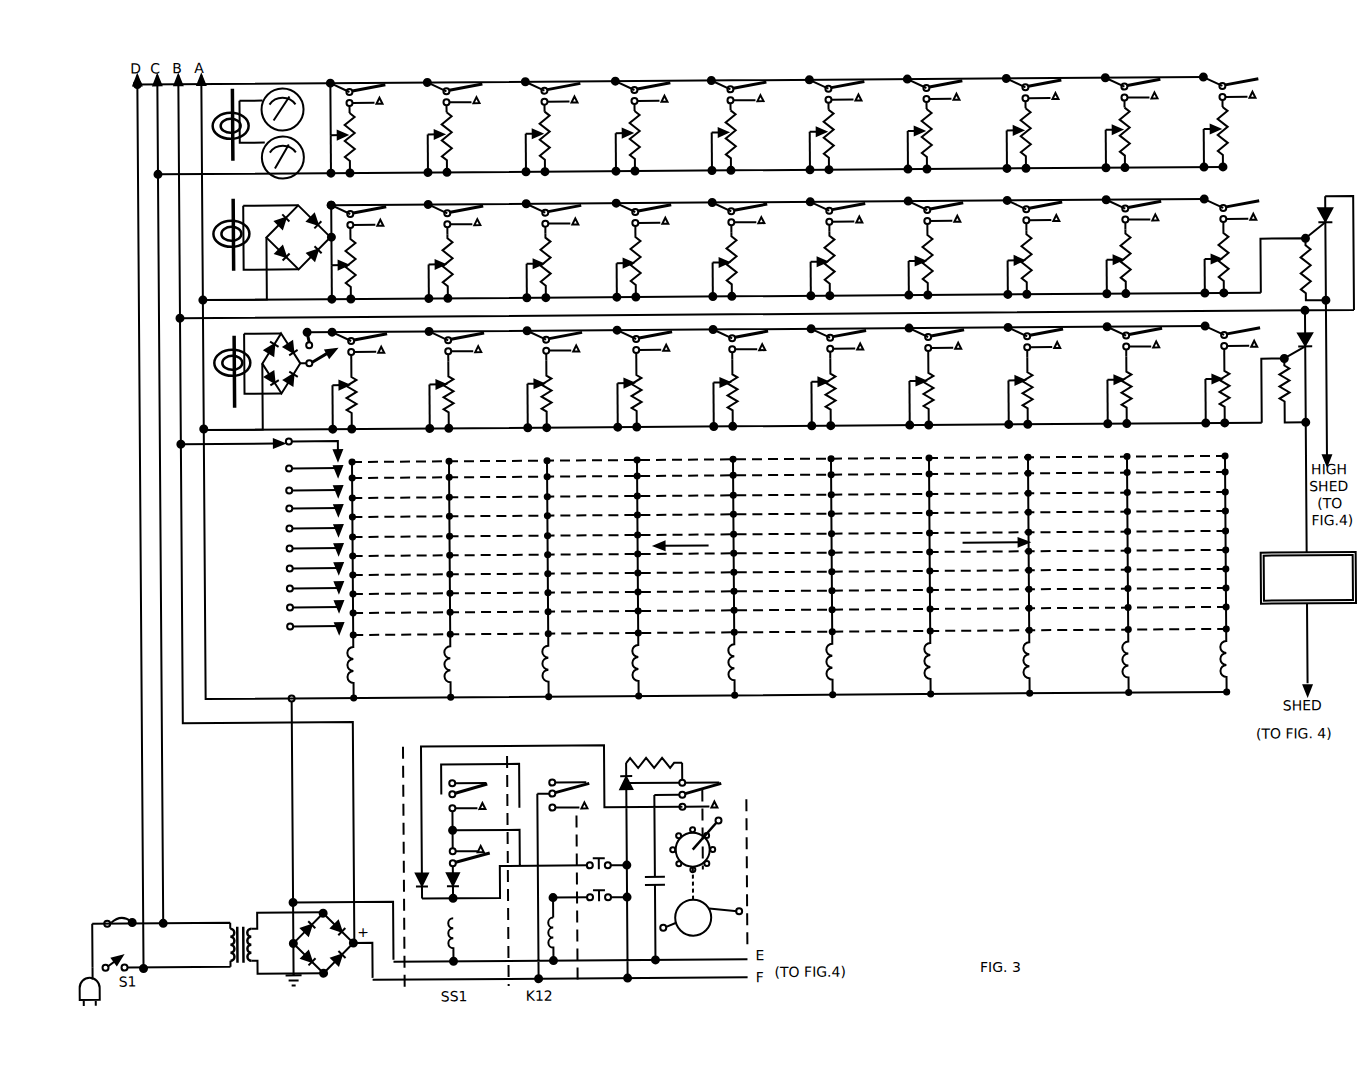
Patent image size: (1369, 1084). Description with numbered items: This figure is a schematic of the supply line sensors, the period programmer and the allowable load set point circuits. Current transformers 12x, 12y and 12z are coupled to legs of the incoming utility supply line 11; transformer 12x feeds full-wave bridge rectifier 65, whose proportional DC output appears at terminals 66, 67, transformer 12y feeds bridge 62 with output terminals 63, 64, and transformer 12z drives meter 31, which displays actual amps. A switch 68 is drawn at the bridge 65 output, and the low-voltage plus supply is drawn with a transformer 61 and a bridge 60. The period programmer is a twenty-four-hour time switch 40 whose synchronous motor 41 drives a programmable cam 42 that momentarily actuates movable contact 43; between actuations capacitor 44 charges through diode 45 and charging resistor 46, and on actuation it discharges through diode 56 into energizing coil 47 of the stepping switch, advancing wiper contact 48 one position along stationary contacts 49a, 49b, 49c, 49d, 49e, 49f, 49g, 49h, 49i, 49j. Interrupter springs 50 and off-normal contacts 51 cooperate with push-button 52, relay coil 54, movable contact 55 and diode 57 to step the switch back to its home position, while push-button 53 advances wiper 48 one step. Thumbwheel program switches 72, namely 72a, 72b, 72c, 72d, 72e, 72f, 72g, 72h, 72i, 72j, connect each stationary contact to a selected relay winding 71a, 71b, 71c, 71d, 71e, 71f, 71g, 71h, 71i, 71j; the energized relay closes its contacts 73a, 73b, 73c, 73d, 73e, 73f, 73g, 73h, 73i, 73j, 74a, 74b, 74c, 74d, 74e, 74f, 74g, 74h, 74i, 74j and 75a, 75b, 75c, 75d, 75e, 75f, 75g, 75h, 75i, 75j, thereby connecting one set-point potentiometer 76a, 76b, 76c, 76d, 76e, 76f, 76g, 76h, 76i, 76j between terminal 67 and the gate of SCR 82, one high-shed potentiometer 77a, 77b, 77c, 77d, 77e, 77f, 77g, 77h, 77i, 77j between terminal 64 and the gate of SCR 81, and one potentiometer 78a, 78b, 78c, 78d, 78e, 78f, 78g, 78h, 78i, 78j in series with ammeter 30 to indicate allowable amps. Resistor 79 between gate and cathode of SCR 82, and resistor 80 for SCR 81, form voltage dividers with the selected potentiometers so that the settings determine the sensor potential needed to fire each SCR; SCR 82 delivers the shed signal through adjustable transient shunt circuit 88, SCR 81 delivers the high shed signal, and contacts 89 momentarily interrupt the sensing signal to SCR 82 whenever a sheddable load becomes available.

The incoming utility supply line 11 is at (233, 388).
The current transformer 12x is at (228, 356).
The current transformer 12y is at (228, 220).
The current transformer 12z is at (226, 116).
The AC ammeter 30 is at (306, 150).
The meter 31 is at (305, 103).
The time switch 40 is at (730, 876).
The synchronous motor 41 is at (705, 930).
The programmable cam 42 is at (712, 848).
The movable timer contact 43 is at (722, 785).
The capacitor 44 is at (640, 872).
The diode 45 is at (633, 783).
The charging resistor 46 is at (645, 762).
The energizing coil 47 is at (460, 940).
The wiper contact 48 is at (272, 452).
The stationary contact 49a is at (289, 438).
The stationary contact 49b is at (286, 469).
The stationary contact 49c is at (286, 491).
The stationary contact 49d is at (286, 509).
The stationary contact 49e is at (286, 529).
The stationary contact 49f is at (286, 549).
The stationary contact 49g is at (286, 569).
The stationary contact 49h is at (286, 589).
The stationary contact 49i is at (286, 608).
The stationary contact 49j is at (286, 627).
The interrupter springs 50 is at (496, 836).
The off-normal contacts 51 is at (480, 790).
The push-button switch 52 is at (600, 906).
The push-button switch 53 is at (608, 853).
The energizing coil 54 is at (560, 940).
The movable contact 55 is at (594, 788).
The diode 56 is at (426, 876).
The diode 57 is at (462, 882).
The rectifier bridge 60 is at (330, 951).
The power transformer 61 is at (235, 922).
The full-wave bridge rectifier 62 is at (309, 245).
The output terminal 63 is at (281, 220).
The output terminal 64 is at (327, 250).
The full-wave bridge rectifier 65 is at (292, 372).
The output terminal 66 is at (262, 400).
The plus output terminal 67 is at (306, 378).
The switch 68 is at (326, 364).
The relay winding 71a is at (356, 683).
The relay winding 71b is at (453, 683).
The relay winding 71c is at (551, 683).
The relay winding 71d is at (641, 683).
The relay winding 71e is at (737, 683).
The relay winding 71f is at (835, 683).
The relay winding 71g is at (933, 683).
The relay winding 71h is at (1032, 683).
The relay winding 71i is at (1131, 683).
The relay winding 71j is at (1229, 683).
The thumbwheel program switches 72 is at (1030, 447).
The thumbwheel program switch 72a is at (1229, 462).
The thumbwheel program switch 72b is at (1229, 478).
The thumbwheel program switch 72c is at (1229, 498).
The thumbwheel program switch 72d is at (1229, 517).
The thumbwheel program switch 72e is at (1229, 537).
The thumbwheel program switch 72f is at (1229, 556).
The thumbwheel program switch 72g is at (1229, 575).
The thumbwheel program switch 72h is at (1229, 594).
The thumbwheel program switch 72i is at (1229, 613).
The thumbwheel program switch 72j is at (1229, 635).
The relay contact 73a is at (388, 349).
The relay contact 73b is at (485, 349).
The relay contact 73c is at (583, 349).
The relay contact 73d is at (673, 349).
The relay contact 73e is at (769, 349).
The relay contact 73f is at (867, 349).
The relay contact 73g is at (965, 349).
The relay contact 73h is at (1064, 349).
The relay contact 73i is at (1163, 349).
The relay contact 73j is at (1261, 349).
The relay contact 74a is at (388, 222).
The relay contact 74b is at (485, 222).
The relay contact 74c is at (583, 222).
The relay contact 74d is at (673, 222).
The relay contact 74e is at (769, 222).
The relay contact 74f is at (867, 222).
The relay contact 74g is at (965, 222).
The relay contact 74h is at (1064, 222).
The relay contact 74i is at (1163, 222).
The relay contact 74j is at (1261, 222).
The relay contact 75a is at (388, 100).
The relay contact 75b is at (485, 100).
The relay contact 75c is at (583, 100).
The relay contact 75d is at (673, 100).
The relay contact 75e is at (769, 100).
The relay contact 75f is at (867, 100).
The relay contact 75g is at (965, 100).
The relay contact 75h is at (1064, 100).
The relay contact 75i is at (1163, 100).
The relay contact 75j is at (1261, 100).
The set point potentiometer 76a is at (357, 392).
The set point potentiometer 76b is at (454, 392).
The set point potentiometer 76c is at (552, 392).
The set point potentiometer 76d is at (642, 392).
The set point potentiometer 76e is at (738, 392).
The set point potentiometer 76f is at (836, 392).
The set point potentiometer 76g is at (934, 392).
The set point potentiometer 76h is at (1033, 392).
The set point potentiometer 76i is at (1132, 392).
The set point potentiometer 76j is at (1230, 392).
The high shed potentiometer 77a is at (357, 268).
The high shed potentiometer 77b is at (454, 268).
The high shed potentiometer 77c is at (552, 268).
The high shed potentiometer 77d is at (642, 268).
The high shed potentiometer 77e is at (738, 268).
The high shed potentiometer 77f is at (836, 268).
The high shed potentiometer 77g is at (934, 268).
The high shed potentiometer 77h is at (1033, 268).
The high shed potentiometer 77i is at (1132, 268).
The high shed potentiometer 77j is at (1230, 268).
The allowable amps potentiometer 78a is at (357, 140).
The allowable amps potentiometer 78b is at (454, 140).
The allowable amps potentiometer 78c is at (552, 140).
The allowable amps potentiometer 78d is at (642, 140).
The allowable amps potentiometer 78e is at (738, 140).
The allowable amps potentiometer 78f is at (836, 140).
The allowable amps potentiometer 78g is at (934, 140).
The allowable amps potentiometer 78h is at (1033, 140).
The allowable amps potentiometer 78i is at (1132, 140).
The allowable amps potentiometer 78j is at (1230, 140).
The resistor 79 is at (1280, 414).
The resistor 80 is at (1300, 272).
The SCR 81 is at (1322, 211).
The SCR 82 is at (1316, 339).
The transient shunt circuit 88 is at (1338, 610).
The relay contacts 89 is at (82, 976).